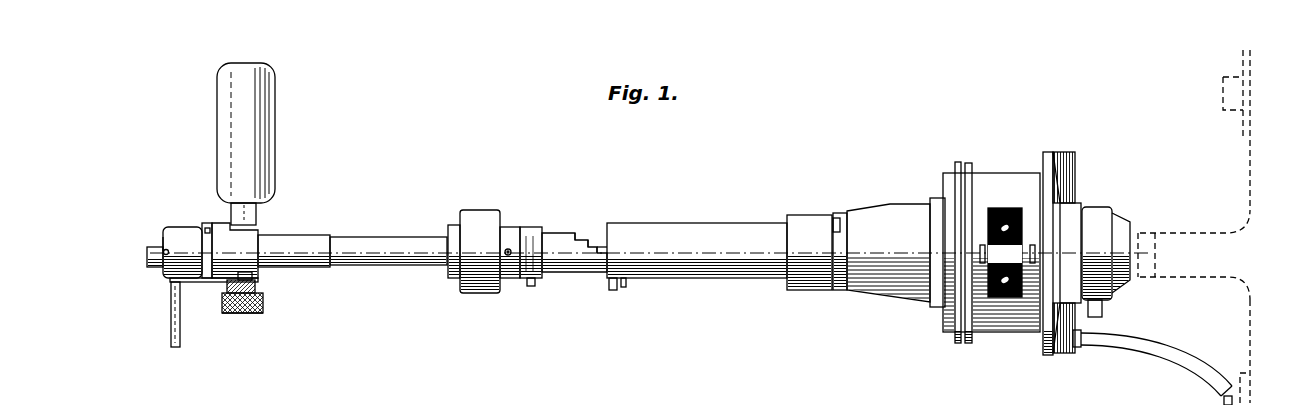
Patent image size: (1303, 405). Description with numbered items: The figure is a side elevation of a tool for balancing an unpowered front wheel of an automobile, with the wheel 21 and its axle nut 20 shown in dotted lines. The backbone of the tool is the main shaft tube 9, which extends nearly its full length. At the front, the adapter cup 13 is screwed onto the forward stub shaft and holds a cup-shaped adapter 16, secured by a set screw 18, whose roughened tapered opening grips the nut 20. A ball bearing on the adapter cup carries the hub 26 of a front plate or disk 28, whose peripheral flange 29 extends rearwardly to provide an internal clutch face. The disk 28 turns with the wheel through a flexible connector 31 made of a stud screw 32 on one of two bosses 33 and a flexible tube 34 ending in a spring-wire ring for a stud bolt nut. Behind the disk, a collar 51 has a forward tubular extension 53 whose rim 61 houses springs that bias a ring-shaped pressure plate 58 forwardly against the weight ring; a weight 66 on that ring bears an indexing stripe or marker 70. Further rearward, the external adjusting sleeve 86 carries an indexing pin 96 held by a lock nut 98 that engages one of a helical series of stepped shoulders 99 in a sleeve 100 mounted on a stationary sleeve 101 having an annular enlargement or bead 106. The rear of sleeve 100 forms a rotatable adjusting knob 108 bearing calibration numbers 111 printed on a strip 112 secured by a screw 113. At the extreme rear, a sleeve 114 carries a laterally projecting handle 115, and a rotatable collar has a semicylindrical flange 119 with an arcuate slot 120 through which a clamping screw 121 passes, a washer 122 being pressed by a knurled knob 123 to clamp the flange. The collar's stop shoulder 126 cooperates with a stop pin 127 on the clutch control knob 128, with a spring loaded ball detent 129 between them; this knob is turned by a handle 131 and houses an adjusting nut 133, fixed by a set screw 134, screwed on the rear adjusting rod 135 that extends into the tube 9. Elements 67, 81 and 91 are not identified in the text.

The main shaft tube 9 is at (406, 245).
The adapter cup 13 is at (1119, 211).
The cup-shaped adapter 16 is at (1136, 291).
The set screw 18 is at (1103, 310).
The nut 20 is at (1148, 232).
The unpowered front or steering wheel 21 is at (1250, 163).
The hub 26 is at (1079, 212).
The front plate or disk 28 is at (1052, 147).
The peripheral flange 29 is at (1043, 355).
The flexible connector 31 is at (1216, 350).
The stud screw 32 is at (1080, 340).
The bosses 33 is at (1075, 160).
The flexible tube 34 is at (1155, 348).
The collar 51 is at (874, 204).
The forward tubular extension 53 is at (905, 296).
The pressure plate 58 is at (968, 162).
The rim 61 is at (958, 343).
The weight 66 is at (1000, 210).
The drum top 67 is at (985, 176).
The indexing stripe or marker 70 is at (1007, 252).
The collar 81 is at (836, 216).
The external adjusting sleeve 86 is at (716, 280).
The ring 91 is at (800, 292).
The indexing pin 96 is at (612, 290).
The lock nut 98 is at (628, 288).
The stepped shoulders 99 is at (590, 245).
The sleeve 100 is at (572, 272).
The sleeve 101 is at (600, 241).
The annular enlargement or bead 106 is at (452, 280).
The rotatable adjusting knob 108 is at (482, 295).
The calibration numbers 111 is at (538, 232).
The strip 112 is at (528, 227).
The screw 113 is at (533, 287).
The sleeve 114 is at (325, 237).
The handle 115 is at (275, 117).
The semicylindrical flange 119 is at (250, 235).
The arcuate slot 120 is at (255, 276).
The clamping screw 121 is at (228, 310).
The washer 122 is at (255, 286).
The knurled knob 123 is at (258, 308).
The stop shoulder 126 is at (187, 254).
The stop pin 127 is at (207, 226).
The clutch control knob 128 is at (183, 227).
The spring loaded ball detent 129 is at (205, 283).
The handle 131 is at (176, 340).
The adjusting nut 133 is at (164, 238).
The set screw 134 is at (163, 251).
The rear adjusting rod 135 is at (152, 268).